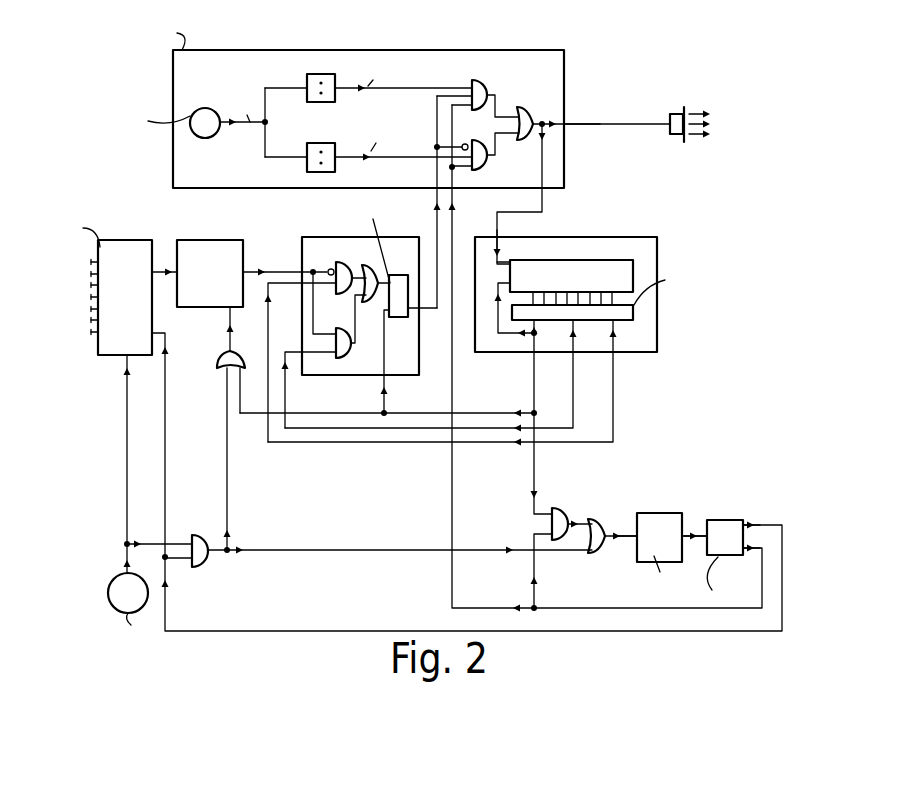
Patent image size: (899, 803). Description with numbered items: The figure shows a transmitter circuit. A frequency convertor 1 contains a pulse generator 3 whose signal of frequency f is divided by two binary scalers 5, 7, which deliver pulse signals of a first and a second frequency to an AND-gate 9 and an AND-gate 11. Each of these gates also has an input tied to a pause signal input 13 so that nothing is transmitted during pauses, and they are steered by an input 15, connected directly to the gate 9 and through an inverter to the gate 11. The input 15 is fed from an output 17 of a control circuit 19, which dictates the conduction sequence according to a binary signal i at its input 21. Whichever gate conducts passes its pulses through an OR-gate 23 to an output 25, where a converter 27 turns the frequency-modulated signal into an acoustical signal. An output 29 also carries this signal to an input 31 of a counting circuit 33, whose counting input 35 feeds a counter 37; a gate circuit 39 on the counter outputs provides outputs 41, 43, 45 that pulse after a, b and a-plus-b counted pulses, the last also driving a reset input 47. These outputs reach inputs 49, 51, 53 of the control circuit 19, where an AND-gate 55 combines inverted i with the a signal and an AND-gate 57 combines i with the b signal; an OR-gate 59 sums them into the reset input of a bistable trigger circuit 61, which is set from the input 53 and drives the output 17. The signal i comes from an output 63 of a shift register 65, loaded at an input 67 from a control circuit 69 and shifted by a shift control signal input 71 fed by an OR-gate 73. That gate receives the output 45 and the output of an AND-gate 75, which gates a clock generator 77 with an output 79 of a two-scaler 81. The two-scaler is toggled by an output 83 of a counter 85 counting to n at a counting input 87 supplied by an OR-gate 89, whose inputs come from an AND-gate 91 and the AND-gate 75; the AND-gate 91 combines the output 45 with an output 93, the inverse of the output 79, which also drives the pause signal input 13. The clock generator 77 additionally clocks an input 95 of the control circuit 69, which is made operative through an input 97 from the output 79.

The frequency convertor 1 is at (206, 50).
The pulse generator 3 is at (209, 109).
The binary scaler 5 is at (307, 78).
The binary scaler 7 is at (307, 143).
The AND-gate 9 is at (481, 86).
The AND-gate 11 is at (483, 165).
The pause signal input 13 is at (452, 196).
The input of the frequency converter device 15 is at (434, 196).
The output of the control circuit 17 is at (420, 310).
The control circuit 19 is at (414, 377).
The input of the control circuit 21 is at (301, 270).
The OR-gate 23 is at (522, 112).
The output 25 is at (565, 124).
The converter 27 is at (672, 114).
The output of the frequency converter device 29 is at (545, 194).
The input of the counting circuit 31 is at (497, 234).
The counting circuit 33 is at (583, 237).
The counting input of the counter 35 is at (502, 262).
The counter 37 is at (577, 260).
The gate circuit 39 is at (634, 312).
The output 41 is at (615, 325).
The output 43 is at (574, 325).
The output 45 is at (535, 325).
The reset input of the counter 47 is at (498, 286).
The input of the control circuit 49 is at (301, 288).
The input of the control circuit 51 is at (301, 350).
The input of the control circuit 53 is at (381, 378).
The AND-gate 55 is at (344, 266).
The AND-gate 57 is at (346, 330).
The OR-gate 59 is at (370, 270).
The bistable trigger circuit 61 is at (404, 275).
The output of the shift register 63 is at (243, 278).
The shift register 65 is at (222, 240).
The input of the shift register 67 is at (175, 270).
The control circuit 69 is at (122, 240).
The shift control signal input 71 is at (230, 312).
The OR-gate 73 is at (217, 357).
The AND-gate 75 is at (196, 535).
The clock generator 77 is at (114, 582).
The output of the two-scaler 79 is at (748, 524).
The two-scaler 81 is at (722, 520).
The output of the counter 83 is at (690, 536).
The counter 85 is at (665, 513).
The counting input 87 is at (630, 536).
The OR-gate 89 is at (594, 521).
The AND-gate 91 is at (566, 510).
The output of the two-scaler 93 is at (738, 555).
The input of control circuit 95 is at (125, 356).
The input of the control device 97 is at (152, 334).